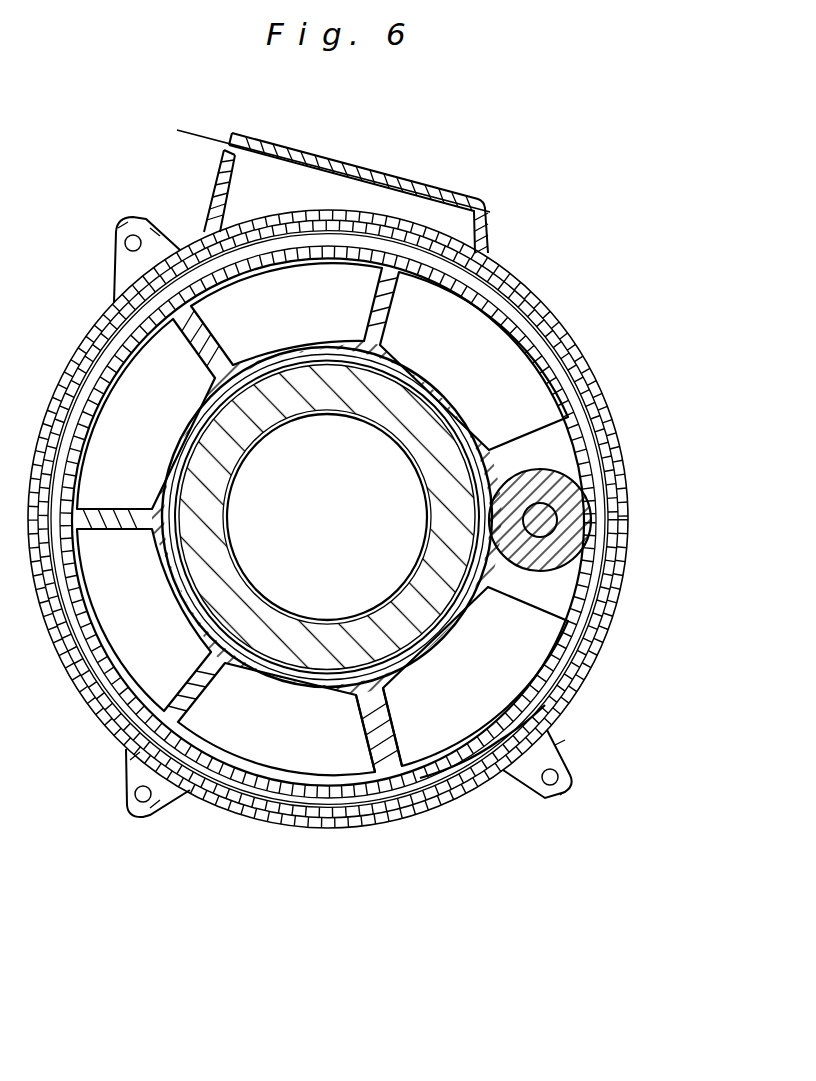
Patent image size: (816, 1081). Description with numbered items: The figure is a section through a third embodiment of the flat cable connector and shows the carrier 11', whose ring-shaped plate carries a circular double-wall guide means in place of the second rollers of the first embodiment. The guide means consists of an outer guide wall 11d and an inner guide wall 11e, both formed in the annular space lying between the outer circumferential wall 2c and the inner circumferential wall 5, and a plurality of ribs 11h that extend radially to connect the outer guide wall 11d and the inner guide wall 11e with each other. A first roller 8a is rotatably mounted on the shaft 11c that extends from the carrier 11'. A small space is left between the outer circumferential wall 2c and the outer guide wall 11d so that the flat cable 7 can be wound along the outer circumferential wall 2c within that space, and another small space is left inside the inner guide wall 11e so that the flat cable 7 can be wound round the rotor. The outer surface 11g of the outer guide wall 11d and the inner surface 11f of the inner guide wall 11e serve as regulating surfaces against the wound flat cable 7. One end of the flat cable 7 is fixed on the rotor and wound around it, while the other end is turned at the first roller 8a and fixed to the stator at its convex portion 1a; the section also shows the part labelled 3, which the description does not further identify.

The convex portion 1a is at (463, 193).
The outer circumferential wall 2c is at (613, 488).
The stator frame 3 is at (607, 405).
The inner circumferential wall 5 is at (280, 647).
The flat cable 7 is at (193, 137).
The first roller 8a is at (564, 482).
The carrier 11' is at (384, 517).
The shaft 11c is at (540, 503).
The outer guide wall 11d is at (555, 652).
The inner guide wall 11e is at (517, 707).
The inner surface 11f is at (358, 700).
The outer surface 11g is at (477, 787).
The ribs 11h is at (392, 735).